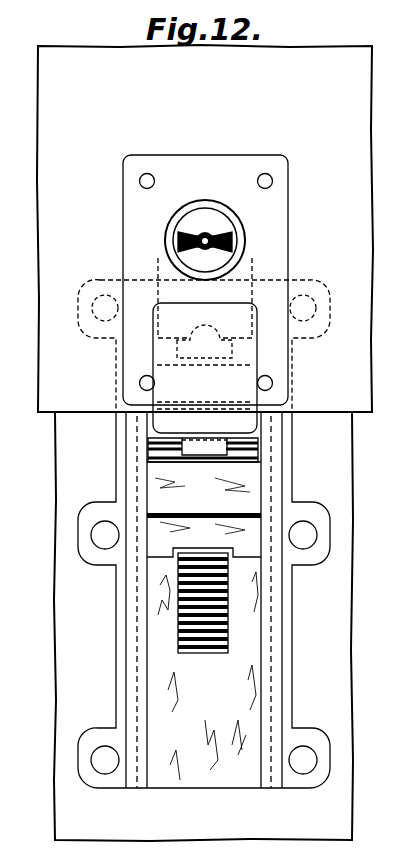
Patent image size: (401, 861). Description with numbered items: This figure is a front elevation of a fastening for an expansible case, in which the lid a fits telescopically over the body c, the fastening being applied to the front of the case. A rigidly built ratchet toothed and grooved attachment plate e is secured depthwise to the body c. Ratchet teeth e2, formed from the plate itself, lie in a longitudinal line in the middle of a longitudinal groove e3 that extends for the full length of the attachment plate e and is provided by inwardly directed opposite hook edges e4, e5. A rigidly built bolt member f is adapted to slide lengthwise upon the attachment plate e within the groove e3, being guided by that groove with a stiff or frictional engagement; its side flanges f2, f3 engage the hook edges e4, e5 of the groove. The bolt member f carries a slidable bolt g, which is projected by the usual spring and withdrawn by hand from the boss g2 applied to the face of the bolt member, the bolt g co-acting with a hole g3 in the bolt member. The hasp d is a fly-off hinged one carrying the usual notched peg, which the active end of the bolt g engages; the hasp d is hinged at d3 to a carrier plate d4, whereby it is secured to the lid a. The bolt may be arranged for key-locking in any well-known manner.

The lid a is at (350, 120).
The body c is at (345, 433).
The hasp d is at (244, 354).
The hinge d3 is at (186, 439).
The carrier plate d4 is at (225, 492).
The attachment plate e is at (295, 636).
The ratchet teeth e2 is at (205, 656).
The longitudinal groove e3 is at (247, 668).
The hook edge e4 is at (140, 684).
The hook edge e5 is at (267, 696).
The bolt member f is at (287, 282).
The side flange f2 is at (137, 448).
The side flange f3 is at (270, 483).
The bolt g is at (158, 298).
The boss g2 is at (180, 216).
The hole g3 is at (205, 362).